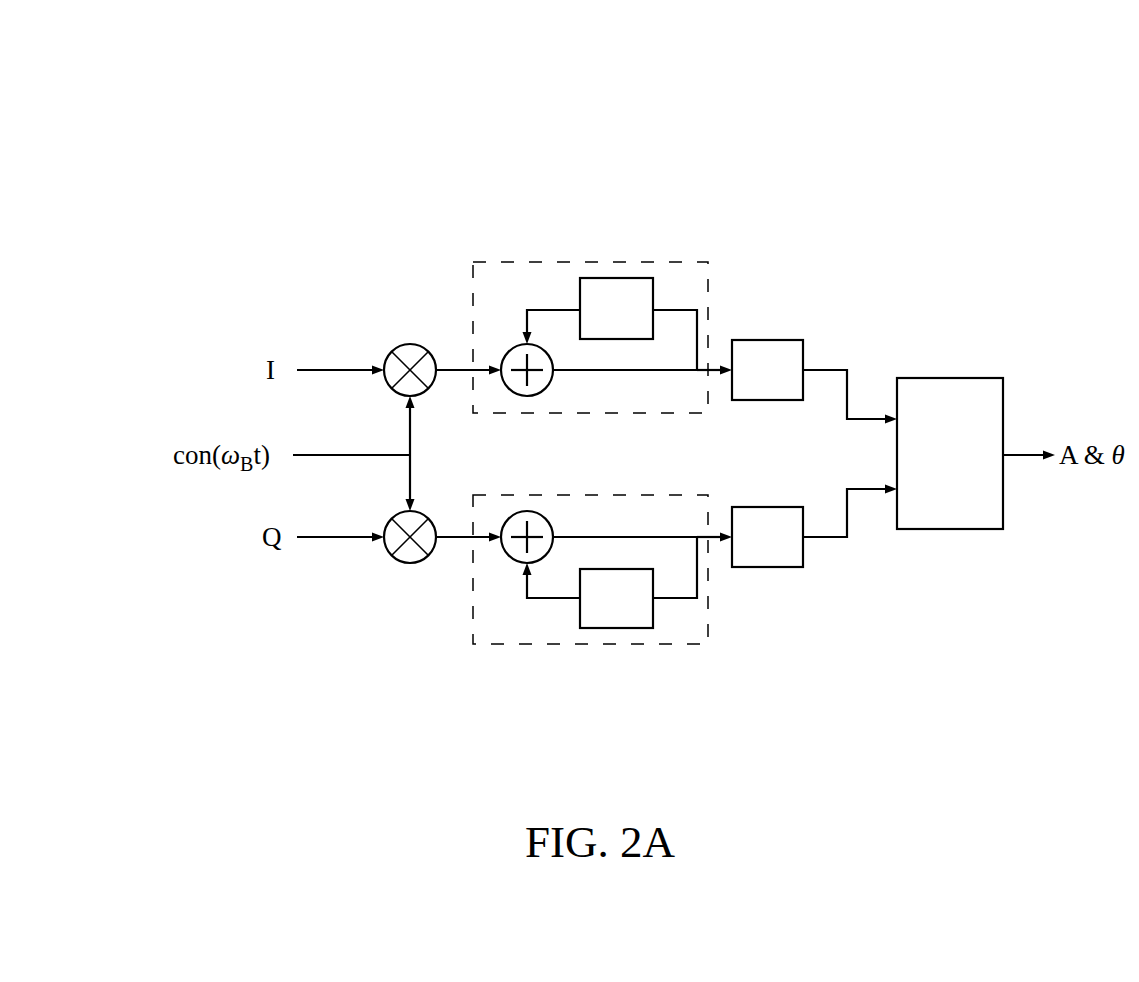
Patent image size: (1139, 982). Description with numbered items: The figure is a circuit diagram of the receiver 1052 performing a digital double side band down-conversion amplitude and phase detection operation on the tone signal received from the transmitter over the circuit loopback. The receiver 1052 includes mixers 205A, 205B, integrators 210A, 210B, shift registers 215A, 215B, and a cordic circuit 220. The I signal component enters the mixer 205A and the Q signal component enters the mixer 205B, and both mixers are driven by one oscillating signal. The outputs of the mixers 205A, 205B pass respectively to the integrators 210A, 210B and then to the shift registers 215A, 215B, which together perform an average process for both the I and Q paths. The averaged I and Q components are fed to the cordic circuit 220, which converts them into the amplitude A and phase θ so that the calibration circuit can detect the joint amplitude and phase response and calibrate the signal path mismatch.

The mixer 205A is at (409, 344).
The mixer 205B is at (407, 563).
The integrator 210A is at (571, 260).
The integrator 210B is at (575, 648).
The shift register 215A is at (767, 340).
The shift register 215B is at (768, 568).
The cordic circuit 220 is at (948, 378).
The receiver 1052 is at (982, 172).